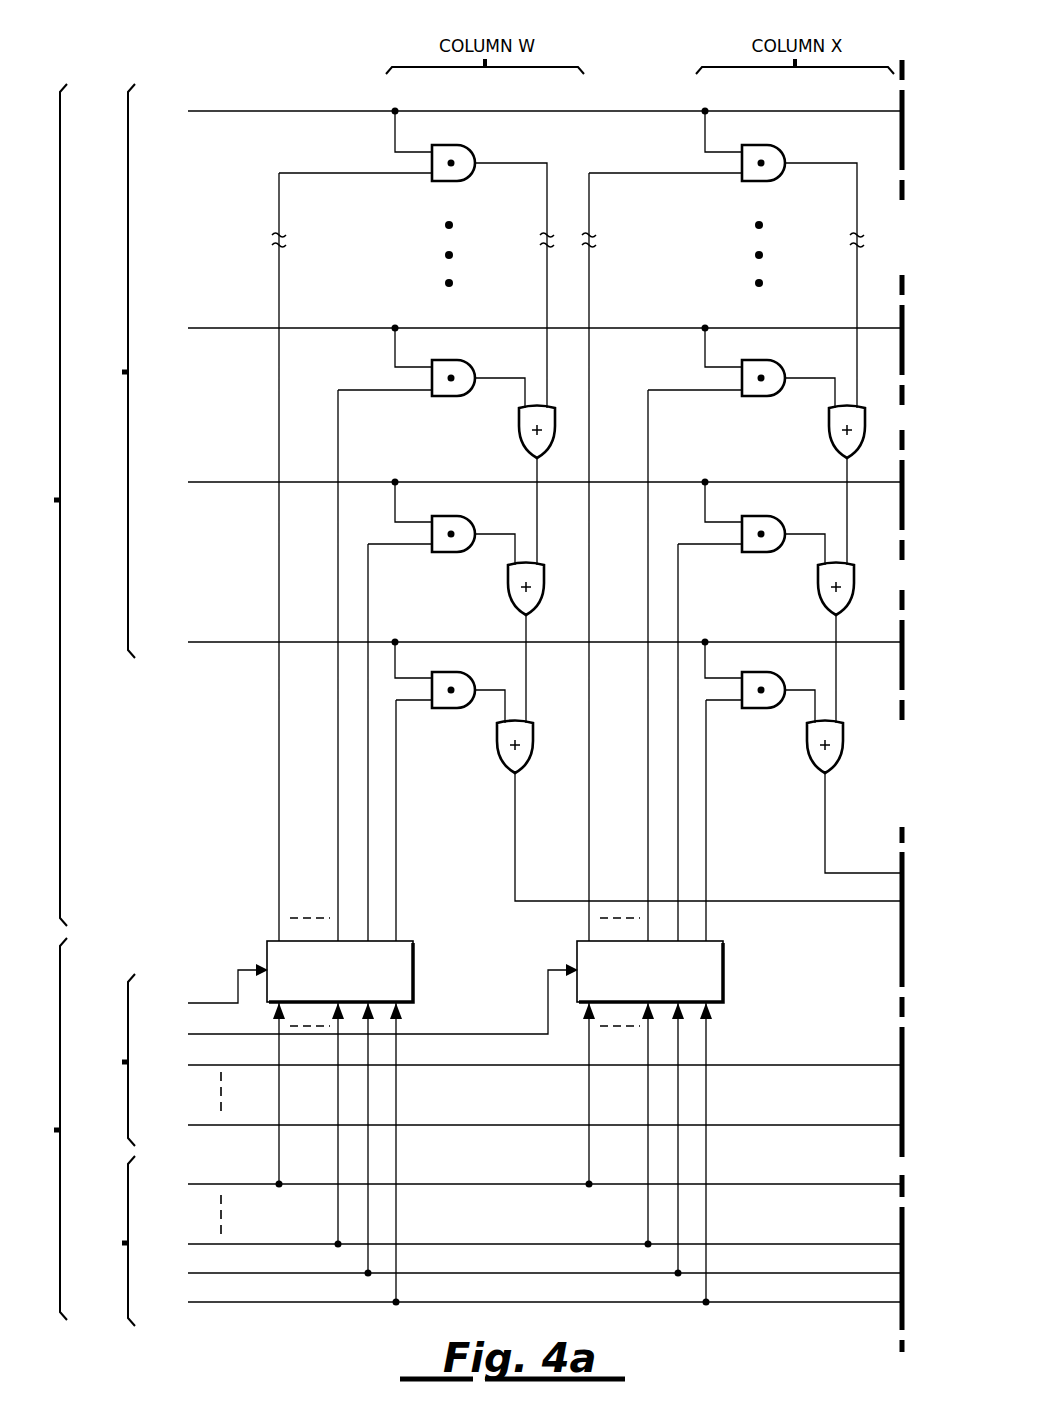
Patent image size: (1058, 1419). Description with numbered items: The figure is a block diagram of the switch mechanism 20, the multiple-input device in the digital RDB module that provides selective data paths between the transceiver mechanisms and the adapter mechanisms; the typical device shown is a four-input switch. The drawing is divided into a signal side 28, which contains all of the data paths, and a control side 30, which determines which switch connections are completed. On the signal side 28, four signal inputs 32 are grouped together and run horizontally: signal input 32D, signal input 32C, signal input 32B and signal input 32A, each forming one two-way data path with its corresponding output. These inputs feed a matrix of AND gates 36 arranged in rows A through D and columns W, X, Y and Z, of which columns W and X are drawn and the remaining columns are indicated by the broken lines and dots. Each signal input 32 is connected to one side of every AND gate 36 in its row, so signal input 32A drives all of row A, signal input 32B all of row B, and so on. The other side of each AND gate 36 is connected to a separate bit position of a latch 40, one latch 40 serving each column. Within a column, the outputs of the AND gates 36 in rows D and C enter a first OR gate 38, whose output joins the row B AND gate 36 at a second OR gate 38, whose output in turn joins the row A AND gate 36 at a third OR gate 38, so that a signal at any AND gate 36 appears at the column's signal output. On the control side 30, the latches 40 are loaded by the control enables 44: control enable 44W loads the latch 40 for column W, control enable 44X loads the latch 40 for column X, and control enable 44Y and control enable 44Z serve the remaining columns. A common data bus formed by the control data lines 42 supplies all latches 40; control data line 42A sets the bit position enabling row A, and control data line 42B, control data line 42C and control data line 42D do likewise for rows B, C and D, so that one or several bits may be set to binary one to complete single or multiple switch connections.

The switch mechanism 20 is at (209, 66).
The signal side 28 is at (40, 505).
The control side 30 is at (40, 1129).
The signal inputs 32 is at (110, 371).
The signal input 32A is at (522, 642).
The signal input 32B is at (522, 482).
The signal input 32C is at (522, 328).
The signal input 32D is at (522, 111).
The AND gate 36 is at (462, 146).
The OR gate 38 is at (520, 437).
The latch 40 is at (413, 951).
The control data lines 42 is at (102, 1241).
The control data line 42A is at (522, 1302).
The control data line 42B is at (522, 1273).
The control data line 42C is at (522, 1244).
The control data line 42D is at (522, 1184).
The control enables 44 is at (102, 1060).
The control enable 44W is at (205, 989).
The control enable 44X is at (360, 1005).
The control enable 44Y is at (522, 1065).
The control enable 44Z is at (522, 1125).